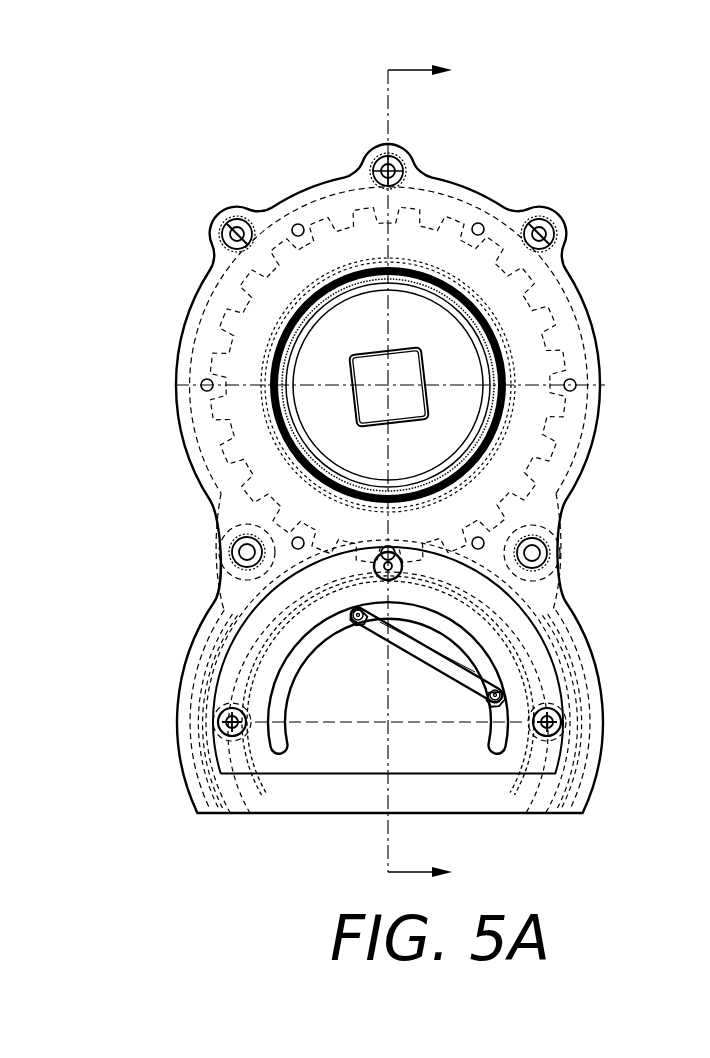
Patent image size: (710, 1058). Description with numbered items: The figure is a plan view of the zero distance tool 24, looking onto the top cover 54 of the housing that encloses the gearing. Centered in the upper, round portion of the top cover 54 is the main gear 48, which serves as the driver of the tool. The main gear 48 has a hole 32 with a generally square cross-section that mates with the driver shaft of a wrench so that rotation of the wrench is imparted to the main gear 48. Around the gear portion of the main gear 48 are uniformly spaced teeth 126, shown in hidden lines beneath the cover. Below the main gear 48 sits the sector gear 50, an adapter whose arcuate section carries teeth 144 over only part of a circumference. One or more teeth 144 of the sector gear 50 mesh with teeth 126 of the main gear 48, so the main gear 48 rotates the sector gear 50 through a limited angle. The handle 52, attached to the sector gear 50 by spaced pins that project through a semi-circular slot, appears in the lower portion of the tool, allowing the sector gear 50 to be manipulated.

The zero distance tool 24 is at (512, 142).
The top cover 54 is at (154, 262).
The hole 32 is at (420, 358).
The teeth 126 is at (515, 350).
The main gear 48 is at (524, 407).
The sector gear 50 is at (470, 567).
The teeth 144 is at (507, 601).
The handle 52 is at (452, 668).